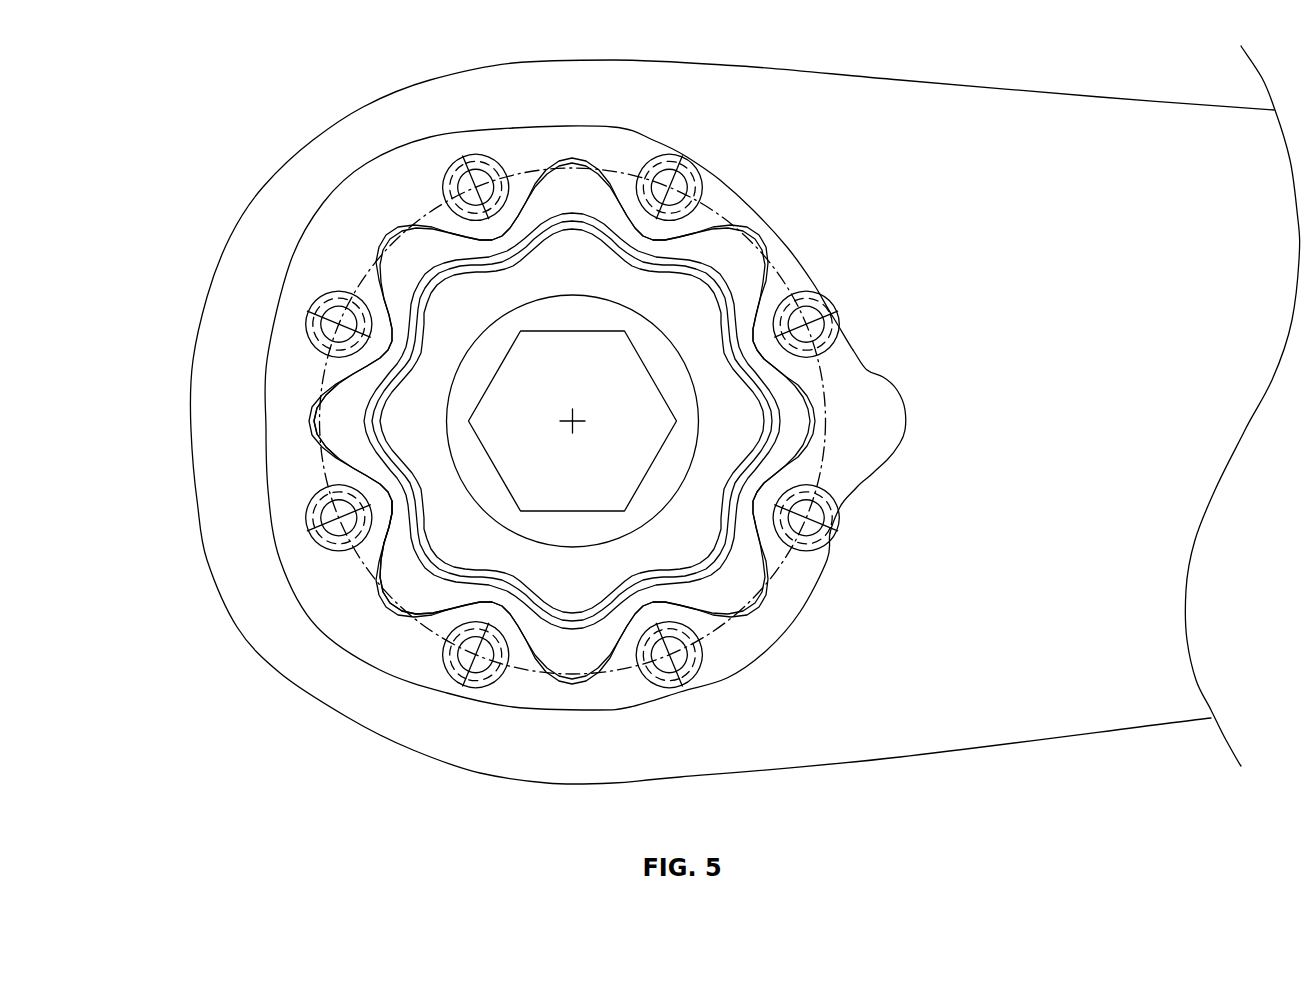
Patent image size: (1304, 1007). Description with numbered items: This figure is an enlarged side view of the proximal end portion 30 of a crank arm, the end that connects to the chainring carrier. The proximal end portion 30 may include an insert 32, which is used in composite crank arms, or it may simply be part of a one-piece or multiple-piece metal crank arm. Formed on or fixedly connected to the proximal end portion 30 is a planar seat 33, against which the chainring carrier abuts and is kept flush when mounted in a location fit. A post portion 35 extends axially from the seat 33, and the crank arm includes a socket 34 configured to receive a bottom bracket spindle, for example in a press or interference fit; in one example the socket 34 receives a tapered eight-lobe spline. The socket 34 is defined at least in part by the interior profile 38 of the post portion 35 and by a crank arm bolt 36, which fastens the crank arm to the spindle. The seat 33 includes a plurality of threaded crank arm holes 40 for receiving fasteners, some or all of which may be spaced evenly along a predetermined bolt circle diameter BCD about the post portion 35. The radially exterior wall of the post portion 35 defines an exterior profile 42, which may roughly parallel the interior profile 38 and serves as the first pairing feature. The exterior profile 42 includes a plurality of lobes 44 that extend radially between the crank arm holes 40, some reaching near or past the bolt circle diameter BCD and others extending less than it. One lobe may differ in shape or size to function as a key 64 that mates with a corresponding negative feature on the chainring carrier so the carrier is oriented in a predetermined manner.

The proximal end portion 30 is at (838, 90).
The insert 32 is at (863, 396).
The seat 33 is at (367, 646).
The socket 34 is at (573, 583).
The post portion 35 is at (330, 420).
The crank arm bolt 36 is at (575, 305).
The interior profile 38 is at (673, 573).
The crank arm holes 40 is at (321, 297).
The exterior profile 42 is at (727, 218).
The lobes 44 is at (382, 606).
The key 64 is at (812, 421).
The bolt circle diameter BCD is at (826, 458).